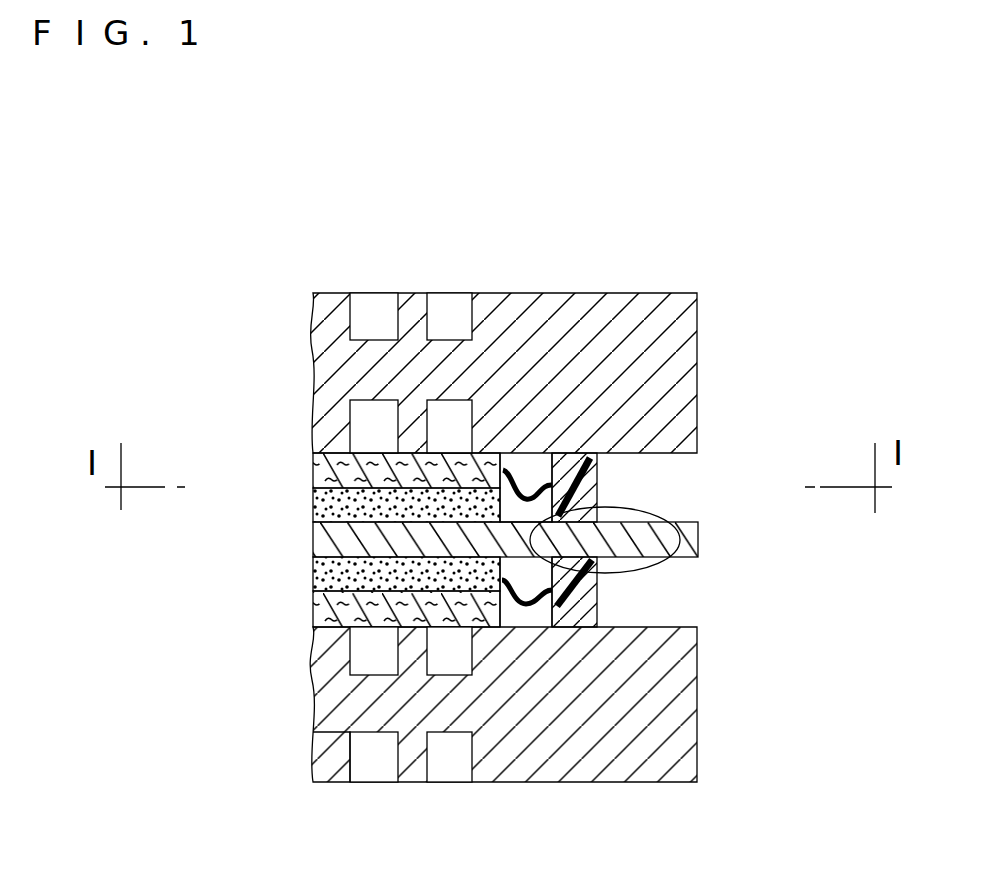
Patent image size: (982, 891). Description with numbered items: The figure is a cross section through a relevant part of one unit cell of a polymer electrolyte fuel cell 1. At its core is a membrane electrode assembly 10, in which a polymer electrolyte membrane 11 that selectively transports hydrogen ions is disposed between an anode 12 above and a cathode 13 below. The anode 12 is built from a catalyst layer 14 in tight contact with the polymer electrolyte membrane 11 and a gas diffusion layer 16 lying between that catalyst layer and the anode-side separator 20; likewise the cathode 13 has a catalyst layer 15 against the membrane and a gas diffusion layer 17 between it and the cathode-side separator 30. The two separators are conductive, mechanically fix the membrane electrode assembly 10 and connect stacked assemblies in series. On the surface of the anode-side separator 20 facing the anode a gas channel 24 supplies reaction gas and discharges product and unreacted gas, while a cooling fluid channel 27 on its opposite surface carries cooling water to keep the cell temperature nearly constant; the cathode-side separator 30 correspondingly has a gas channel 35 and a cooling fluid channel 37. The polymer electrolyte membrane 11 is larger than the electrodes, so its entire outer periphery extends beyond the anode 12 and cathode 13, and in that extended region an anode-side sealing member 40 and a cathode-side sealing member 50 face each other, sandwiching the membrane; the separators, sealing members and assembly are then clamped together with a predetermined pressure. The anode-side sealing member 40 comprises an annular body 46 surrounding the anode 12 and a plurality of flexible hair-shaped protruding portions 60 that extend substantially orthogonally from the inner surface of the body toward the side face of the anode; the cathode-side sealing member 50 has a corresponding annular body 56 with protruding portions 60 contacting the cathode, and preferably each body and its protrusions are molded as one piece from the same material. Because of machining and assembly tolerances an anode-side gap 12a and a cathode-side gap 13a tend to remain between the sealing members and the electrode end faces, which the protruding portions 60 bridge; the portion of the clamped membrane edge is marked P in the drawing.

The fuel cell 1 is at (764, 226).
The membrane electrode assembly 10 is at (285, 448).
The polymer electrolyte membrane 11 is at (700, 540).
The anode 12 is at (198, 270).
The anode-side gap 12a is at (517, 468).
The cathode 13 is at (190, 630).
The cathode-side gap 13a is at (513, 612).
The catalyst layer 14 is at (372, 507).
The catalyst layer 15 is at (335, 578).
The gas diffusion layer 16 is at (413, 465).
The gas diffusion layer 17 is at (385, 615).
The anode-side separator 20 is at (640, 327).
The gas channel 24 is at (457, 418).
The cooling fluid channel 27 is at (380, 312).
The cathode-side separator 30 is at (617, 763).
The gas channel 35 is at (345, 782).
The cooling fluid channel 37 is at (382, 767).
The anode-side sealing member 40 is at (778, 357).
The annular body 46 is at (597, 480).
The cathode-side sealing member 50 is at (803, 638).
The annular body 56 is at (594, 610).
The protruding portions 60 is at (505, 470).
The sealed portion P is at (655, 572).